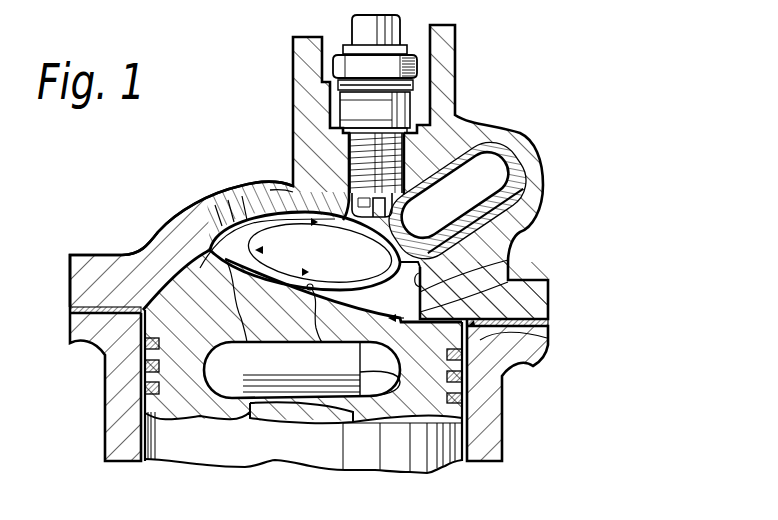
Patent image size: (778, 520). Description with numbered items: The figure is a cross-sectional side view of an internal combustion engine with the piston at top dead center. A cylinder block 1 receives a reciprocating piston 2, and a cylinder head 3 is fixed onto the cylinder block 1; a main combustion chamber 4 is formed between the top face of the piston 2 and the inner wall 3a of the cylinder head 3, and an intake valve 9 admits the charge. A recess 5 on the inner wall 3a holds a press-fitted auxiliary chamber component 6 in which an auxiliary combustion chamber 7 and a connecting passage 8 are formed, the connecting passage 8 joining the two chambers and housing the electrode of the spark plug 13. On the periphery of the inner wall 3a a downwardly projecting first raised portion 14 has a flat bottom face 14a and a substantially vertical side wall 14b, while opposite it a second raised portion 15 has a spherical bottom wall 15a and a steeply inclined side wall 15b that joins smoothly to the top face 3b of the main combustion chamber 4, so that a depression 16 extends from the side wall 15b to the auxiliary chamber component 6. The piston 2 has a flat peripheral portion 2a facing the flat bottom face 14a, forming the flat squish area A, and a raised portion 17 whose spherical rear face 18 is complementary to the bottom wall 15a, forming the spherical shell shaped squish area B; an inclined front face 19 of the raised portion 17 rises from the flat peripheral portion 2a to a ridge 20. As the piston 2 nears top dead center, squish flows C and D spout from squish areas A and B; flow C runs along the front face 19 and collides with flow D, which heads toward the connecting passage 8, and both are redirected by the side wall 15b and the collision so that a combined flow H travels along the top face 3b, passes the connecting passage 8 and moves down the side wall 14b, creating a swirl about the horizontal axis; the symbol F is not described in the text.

The cylinder block 1 is at (307, 387).
The piston 2 is at (303, 380).
The flat peripheral portion 2a is at (405, 415).
The cylinder head 3 is at (313, 172).
The inner wall 3a is at (253, 183).
The top face 3b is at (284, 190).
The main combustion chamber 4 is at (404, 292).
The recess 5 is at (522, 232).
The auxiliary chamber component 6 is at (464, 198).
The auxiliary combustion chamber 7 is at (469, 204).
The connecting passage 8 is at (293, 170).
The intake valve 9 is at (233, 217).
The spark plug 13 is at (400, 27).
The first raised portion 14 is at (497, 279).
The flat bottom face 14a is at (510, 383).
The side wall 14b is at (500, 262).
The second raised portion 15 is at (244, 227).
The bottom wall 15a is at (100, 362).
The side wall 15b is at (197, 233).
The depression 16 is at (233, 187).
The raised portion 17 is at (150, 247).
The rear face 18 is at (248, 343).
The front face 19 is at (330, 381).
The ridge 20 is at (273, 346).
The squish area A is at (540, 357).
The squish area B is at (110, 257).
The squish flow C is at (380, 369).
The squish flow D is at (222, 257).
The combustion chamber bowl F is at (362, 270).
The squish flow H is at (203, 213).